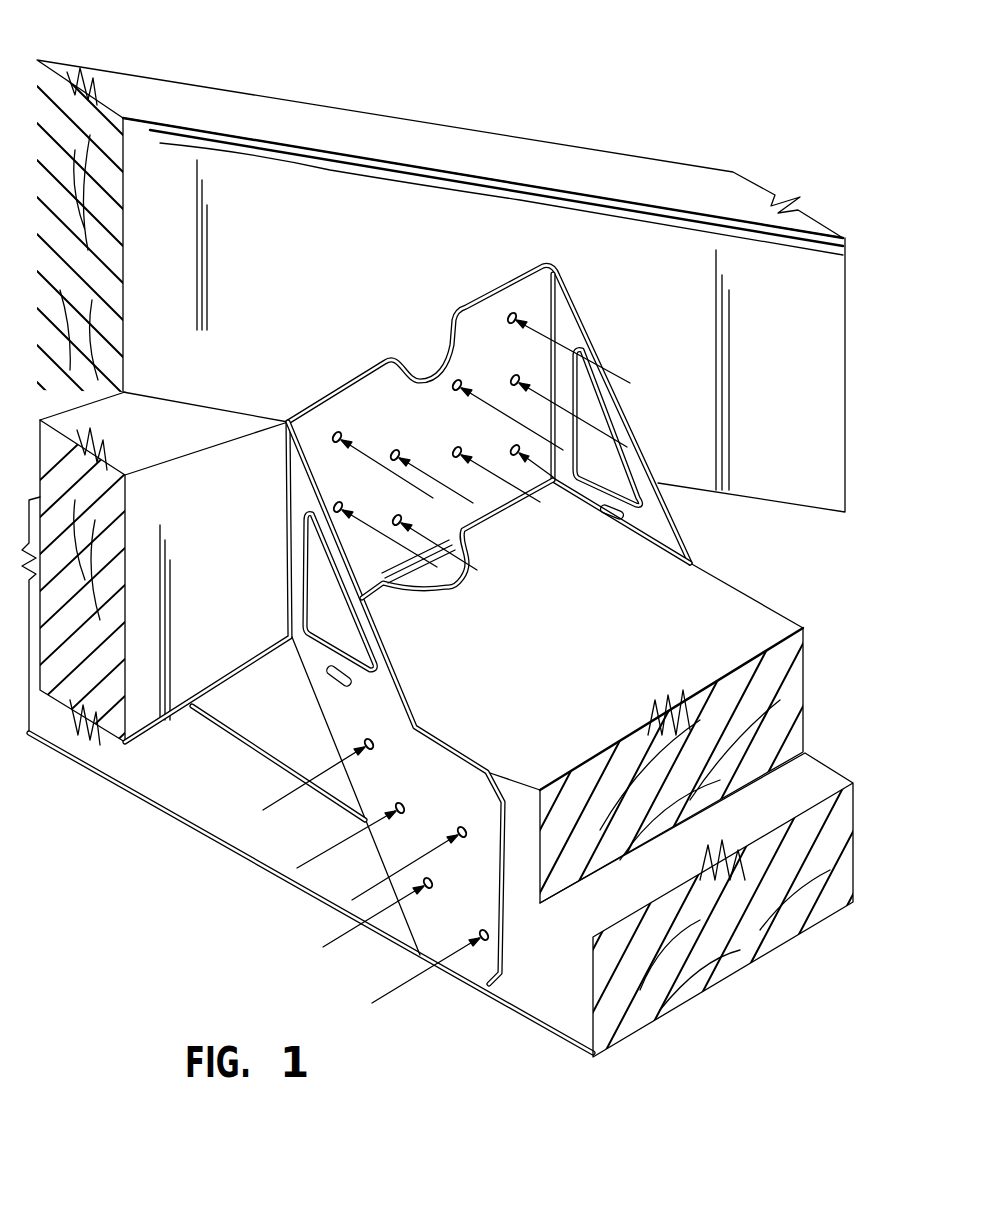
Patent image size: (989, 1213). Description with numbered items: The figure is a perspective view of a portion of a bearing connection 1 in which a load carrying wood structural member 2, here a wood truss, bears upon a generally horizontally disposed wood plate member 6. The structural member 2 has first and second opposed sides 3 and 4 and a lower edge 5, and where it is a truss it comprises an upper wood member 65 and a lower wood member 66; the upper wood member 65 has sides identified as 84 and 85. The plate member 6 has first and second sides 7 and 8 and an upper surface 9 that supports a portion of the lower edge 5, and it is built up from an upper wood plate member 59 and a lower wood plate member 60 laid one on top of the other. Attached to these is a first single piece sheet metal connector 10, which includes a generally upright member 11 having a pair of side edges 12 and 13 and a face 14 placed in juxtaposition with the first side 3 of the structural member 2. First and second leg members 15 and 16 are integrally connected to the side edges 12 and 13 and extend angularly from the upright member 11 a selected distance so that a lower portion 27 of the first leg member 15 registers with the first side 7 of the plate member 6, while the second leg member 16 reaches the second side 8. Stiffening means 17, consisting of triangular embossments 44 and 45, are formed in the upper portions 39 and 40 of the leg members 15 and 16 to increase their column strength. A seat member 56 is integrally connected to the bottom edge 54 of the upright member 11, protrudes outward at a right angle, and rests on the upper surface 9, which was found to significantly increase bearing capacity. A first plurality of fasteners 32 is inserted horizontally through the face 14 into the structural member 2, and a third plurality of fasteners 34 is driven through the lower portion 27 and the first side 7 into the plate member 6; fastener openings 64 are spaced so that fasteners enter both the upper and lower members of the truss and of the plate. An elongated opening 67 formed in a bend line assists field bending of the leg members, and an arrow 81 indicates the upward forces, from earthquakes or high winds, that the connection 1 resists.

The bearing connection 1 is at (490, 550).
The load carrying wood structural member 2 is at (307, 710).
The first side 3 is at (150, 513).
The second side 4 is at (38, 426).
The lower edge 5 is at (117, 742).
The wood plate member 6 is at (669, 813).
The first side 7 is at (568, 1012).
The second side 8 is at (704, 895).
The upper surface 9 is at (545, 666).
The first single piece sheet metal connector 10 is at (405, 688).
The generally upright member 11 is at (490, 643).
The side edge 12 is at (287, 421).
The side edge 13 is at (547, 266).
The face 14 is at (368, 370).
The first leg member 15 is at (323, 717).
The second leg member 16 is at (668, 512).
The stiffening means 17 is at (303, 571).
The lower portion 27 is at (418, 905).
The first plurality of fasteners 32 is at (483, 500).
The third plurality of fasteners 34 is at (353, 892).
The upper portion 39 is at (300, 490).
The upper portion 40 is at (578, 330).
The triangular embossment 44 is at (310, 606).
The triangular embossment 45 is at (598, 400).
The bottom edge 54 is at (507, 515).
The seat member 56 is at (460, 588).
The upper wood plate member 59 is at (806, 670).
The lower wood plate member 60 is at (820, 757).
The fastener openings 64 is at (398, 452).
The upper wood member 65 is at (435, 258).
The lower wood member 66 is at (80, 697).
The elongated opening 67 is at (337, 677).
The arrow 81 is at (415, 55).
The side 84 is at (282, 247).
The side 85 is at (33, 88).